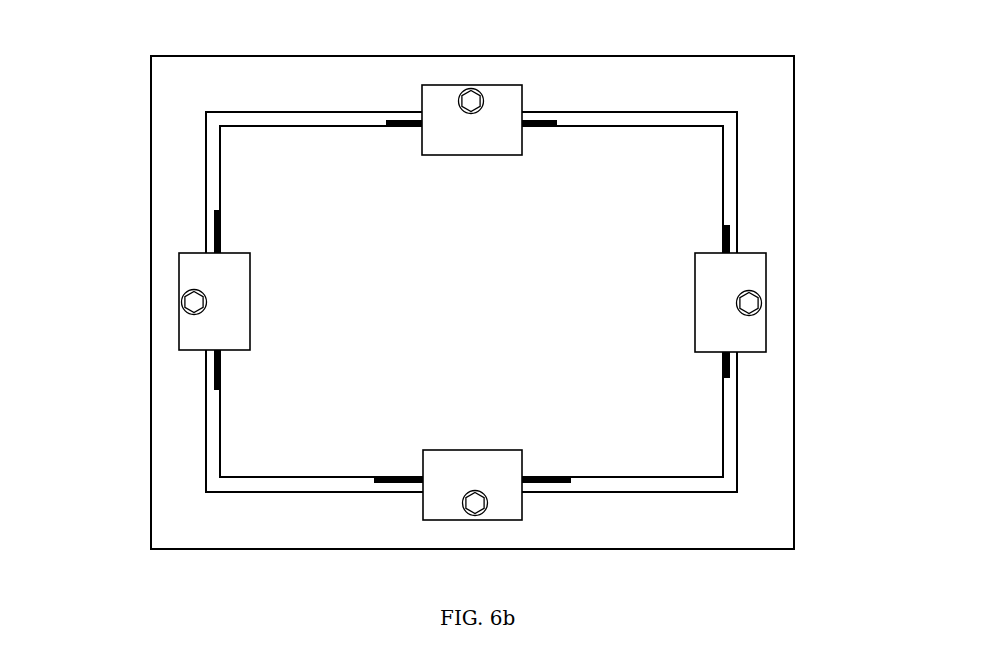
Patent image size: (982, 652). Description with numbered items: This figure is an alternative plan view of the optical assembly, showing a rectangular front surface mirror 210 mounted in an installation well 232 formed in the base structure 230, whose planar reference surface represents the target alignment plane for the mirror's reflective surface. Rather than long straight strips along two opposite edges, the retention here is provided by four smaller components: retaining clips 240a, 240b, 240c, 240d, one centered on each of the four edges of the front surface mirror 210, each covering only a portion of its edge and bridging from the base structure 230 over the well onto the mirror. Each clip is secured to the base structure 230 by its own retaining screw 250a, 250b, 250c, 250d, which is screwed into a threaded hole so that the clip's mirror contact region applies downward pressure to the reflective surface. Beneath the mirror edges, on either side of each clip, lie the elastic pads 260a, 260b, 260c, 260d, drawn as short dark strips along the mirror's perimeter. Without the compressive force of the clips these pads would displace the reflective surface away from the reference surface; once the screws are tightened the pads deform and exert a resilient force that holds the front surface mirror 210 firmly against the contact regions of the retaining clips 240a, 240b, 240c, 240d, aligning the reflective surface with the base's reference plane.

The front surface mirror 210 is at (708, 469).
The base structure 230 is at (777, 539).
The installation well 232 is at (610, 112).
The retaining clip 240a is at (190, 253).
The retaining clip 240b is at (760, 253).
The retaining clip 240c is at (457, 85).
The retaining clip 240d is at (445, 520).
The retaining screw 250a is at (190, 314).
The retaining screw 250b is at (752, 315).
The retaining screw 250c is at (479, 90).
The retaining screw 250d is at (485, 520).
The elastic pad 260a is at (215, 210).
The elastic pad 260b is at (729, 226).
The elastic pad 260c is at (400, 120).
The elastic pad 260d is at (385, 486).